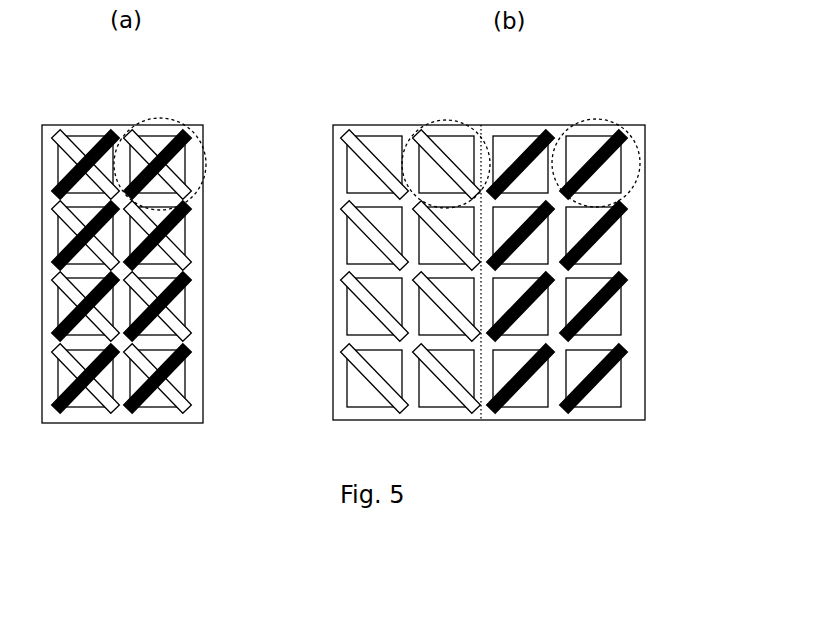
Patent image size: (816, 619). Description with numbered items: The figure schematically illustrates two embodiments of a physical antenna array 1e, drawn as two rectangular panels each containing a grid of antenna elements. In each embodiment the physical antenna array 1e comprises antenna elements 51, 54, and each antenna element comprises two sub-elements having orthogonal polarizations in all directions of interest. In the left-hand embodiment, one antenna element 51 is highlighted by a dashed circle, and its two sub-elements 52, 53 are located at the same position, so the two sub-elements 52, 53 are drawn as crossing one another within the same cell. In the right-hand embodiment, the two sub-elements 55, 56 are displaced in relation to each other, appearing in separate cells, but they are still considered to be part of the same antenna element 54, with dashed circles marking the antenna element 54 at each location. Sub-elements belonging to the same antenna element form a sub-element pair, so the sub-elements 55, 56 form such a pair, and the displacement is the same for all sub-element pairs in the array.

The physical antenna array 1e is at (120, 126).
The antenna element 51 is at (210, 167).
The sub-element 52 is at (192, 130).
The sub-element 53 is at (183, 196).
The antenna element 54 is at (413, 133).
The sub-element 55 is at (450, 143).
The sub-element 56 is at (612, 158).